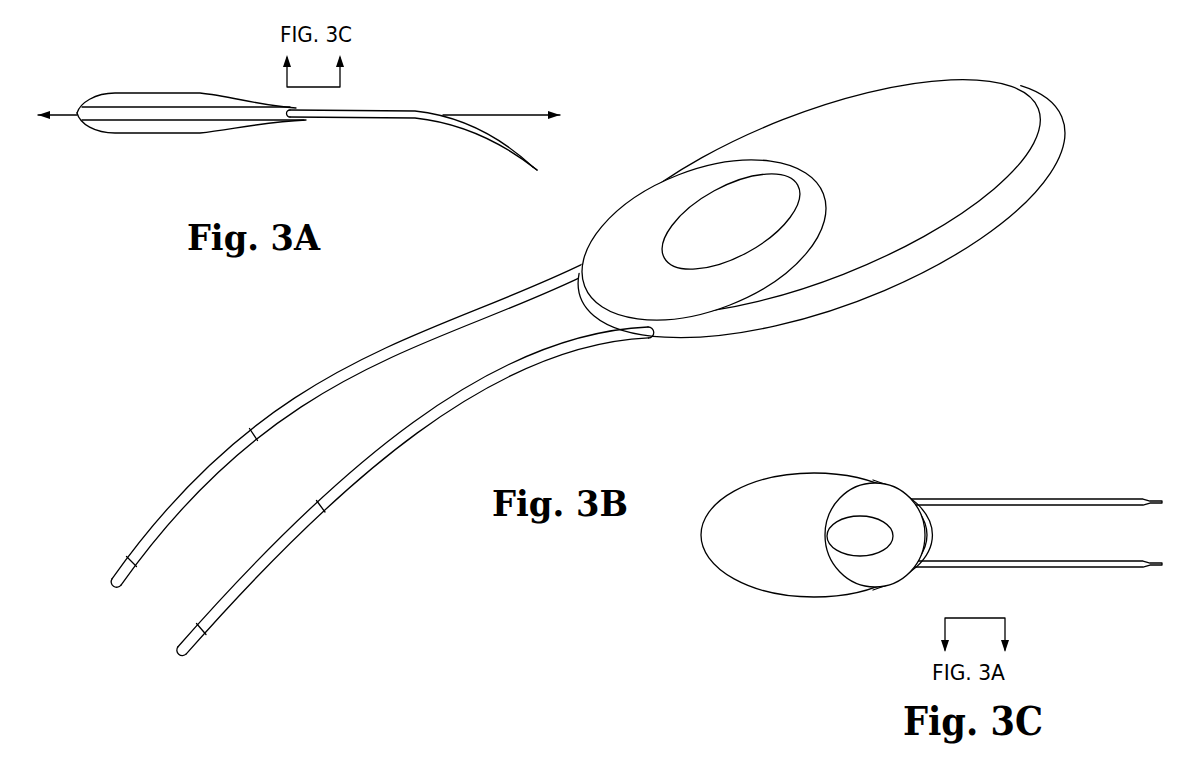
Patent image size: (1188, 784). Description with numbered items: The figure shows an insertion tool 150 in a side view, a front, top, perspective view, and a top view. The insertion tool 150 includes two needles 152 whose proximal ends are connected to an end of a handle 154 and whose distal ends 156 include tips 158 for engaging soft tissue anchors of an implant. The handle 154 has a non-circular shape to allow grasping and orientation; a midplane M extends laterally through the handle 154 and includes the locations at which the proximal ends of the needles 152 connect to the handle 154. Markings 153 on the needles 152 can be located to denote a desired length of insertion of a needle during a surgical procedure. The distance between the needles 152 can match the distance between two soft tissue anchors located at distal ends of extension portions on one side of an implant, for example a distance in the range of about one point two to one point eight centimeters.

In FIG. 3A, the insertion tool 150 is at (307, 124).
In FIG. 3B, the insertion tool 150 is at (597, 369).
In FIG. 3C, the insertion tool 150 is at (931, 545).
In FIG. 3A, the needles 152 is at (418, 110).
In FIG. 3B, the needles 152 is at (322, 380).
In FIG. 3C, the needles 152 is at (1038, 498).
In FIG. 3B, the markings 153 is at (252, 426).
In FIG. 3A, the handle 154 is at (176, 92).
In FIG. 3B, the handle 154 is at (940, 258).
In FIG. 3C, the handle 154 is at (799, 479).
In FIG. 3B, the distal ends 156 is at (122, 514).
In FIG. 3B, the tips 158 is at (113, 588).
In FIG. 3A, the midplane M is at (63, 110).